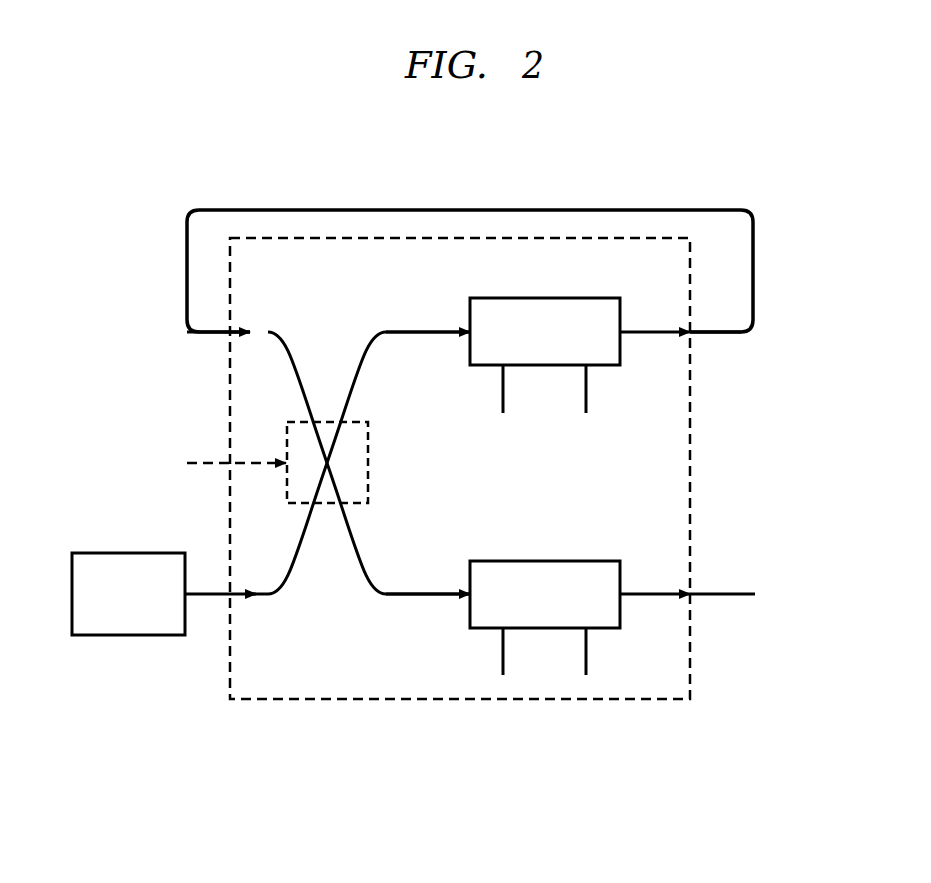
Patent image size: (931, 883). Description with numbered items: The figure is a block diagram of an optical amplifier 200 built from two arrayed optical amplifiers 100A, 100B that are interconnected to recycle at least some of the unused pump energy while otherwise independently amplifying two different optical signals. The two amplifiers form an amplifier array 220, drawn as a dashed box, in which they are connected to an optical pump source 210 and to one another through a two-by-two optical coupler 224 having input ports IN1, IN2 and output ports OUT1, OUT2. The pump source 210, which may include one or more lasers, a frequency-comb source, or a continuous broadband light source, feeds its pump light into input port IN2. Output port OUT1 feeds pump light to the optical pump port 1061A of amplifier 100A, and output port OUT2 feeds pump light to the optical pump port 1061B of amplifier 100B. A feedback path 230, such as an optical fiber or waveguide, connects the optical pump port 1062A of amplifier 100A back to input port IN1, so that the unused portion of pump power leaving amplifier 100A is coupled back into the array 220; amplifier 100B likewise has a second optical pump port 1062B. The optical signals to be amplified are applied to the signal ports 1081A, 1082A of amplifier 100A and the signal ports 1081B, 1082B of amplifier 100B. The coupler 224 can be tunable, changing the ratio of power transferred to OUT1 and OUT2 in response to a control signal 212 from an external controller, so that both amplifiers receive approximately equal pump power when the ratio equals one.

The optical amplifier 200 is at (490, 125).
The optical pump source 210 is at (124, 553).
The control signal 212 is at (206, 460).
The amplifier array 220 is at (288, 700).
The 2×2 optical coupler 224 is at (326, 556).
The feedback path 230 is at (436, 210).
The optical amplifier 100A is at (553, 298).
The optical amplifier 100B is at (553, 560).
The optical pump port 1061A is at (444, 328).
The optical pump port 1061B is at (421, 591).
The optical pump port 1062A is at (713, 334).
The optical pump port 1062B is at (720, 592).
The signal port 1081A is at (502, 385).
The signal port 1082A is at (587, 384).
The signal port 1081B is at (503, 650).
The signal port 1082B is at (587, 643).